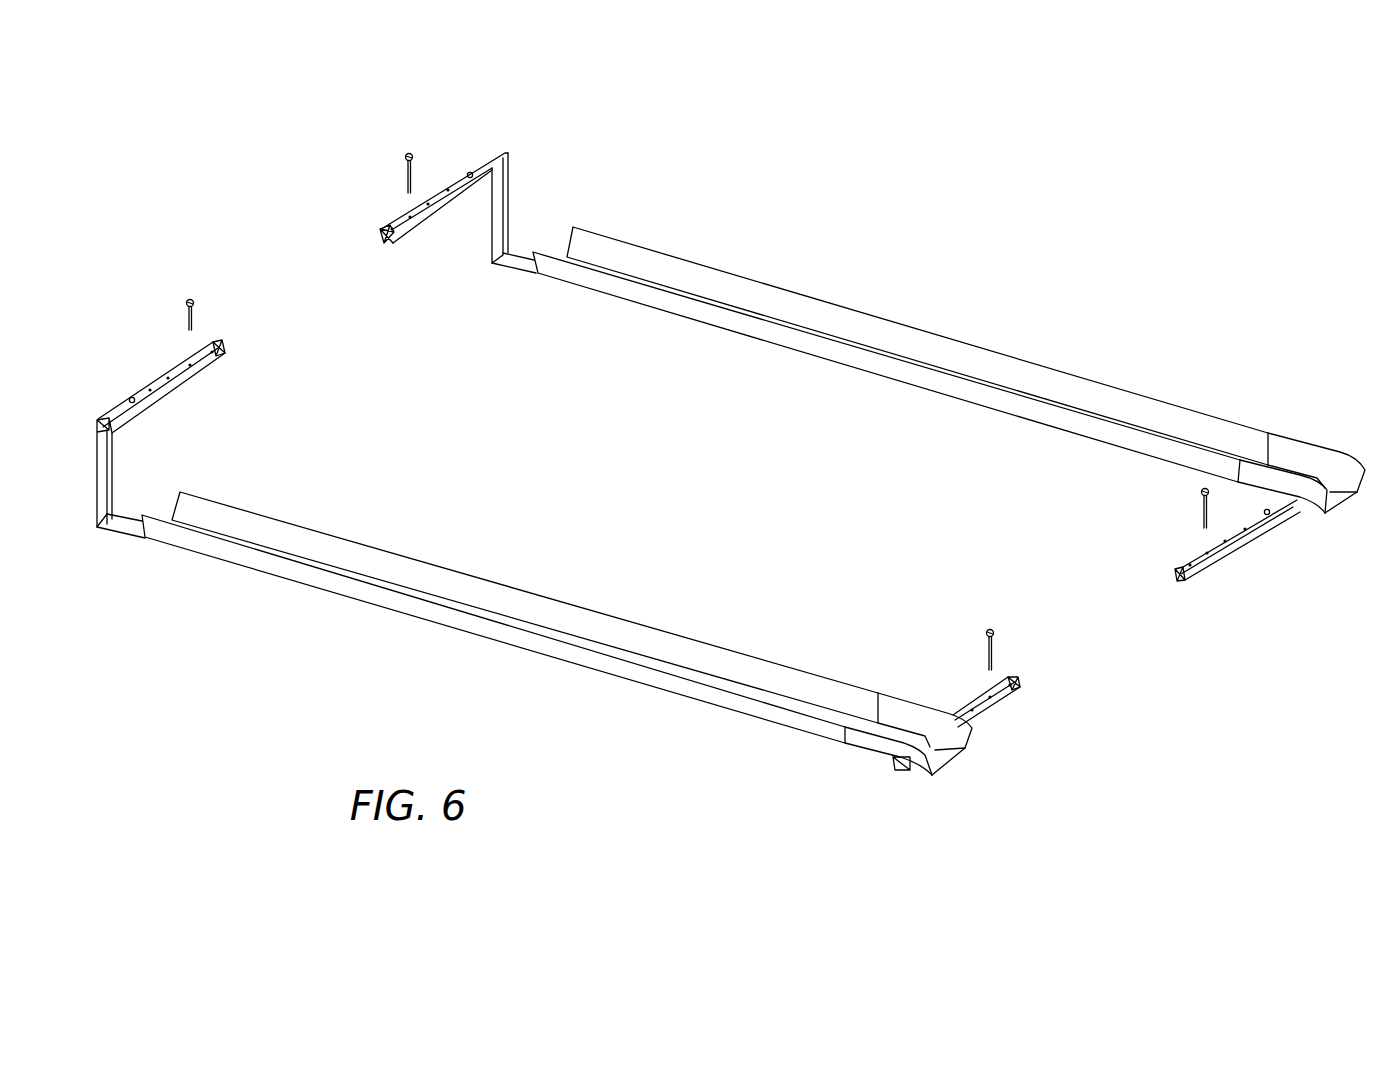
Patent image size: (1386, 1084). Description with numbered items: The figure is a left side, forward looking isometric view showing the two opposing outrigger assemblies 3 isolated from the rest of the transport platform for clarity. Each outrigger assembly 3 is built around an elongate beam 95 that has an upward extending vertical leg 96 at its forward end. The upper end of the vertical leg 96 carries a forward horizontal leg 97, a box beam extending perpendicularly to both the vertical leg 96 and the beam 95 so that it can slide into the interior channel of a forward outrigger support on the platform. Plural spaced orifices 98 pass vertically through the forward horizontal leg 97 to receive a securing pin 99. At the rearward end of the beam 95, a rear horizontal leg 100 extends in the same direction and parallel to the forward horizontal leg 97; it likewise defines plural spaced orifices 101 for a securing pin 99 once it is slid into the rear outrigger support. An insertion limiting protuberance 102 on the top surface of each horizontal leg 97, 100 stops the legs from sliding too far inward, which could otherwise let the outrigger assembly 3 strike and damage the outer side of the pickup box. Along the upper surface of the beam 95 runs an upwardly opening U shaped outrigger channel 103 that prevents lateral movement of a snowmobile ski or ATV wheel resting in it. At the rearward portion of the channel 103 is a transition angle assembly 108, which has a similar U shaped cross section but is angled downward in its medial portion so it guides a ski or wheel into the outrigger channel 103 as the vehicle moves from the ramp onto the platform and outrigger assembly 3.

The outrigger assembly 3 is at (576, 316).
The elongate beam 95 is at (513, 264).
The vertical leg 96 is at (500, 212).
The forward horizontal leg 97 is at (500, 154).
The spaced orifices 98 is at (448, 191).
The securing pin 99 is at (406, 153).
The rear horizontal leg 100 is at (1260, 523).
The spaced orifices 101 is at (1245, 530).
The insertion limiting protuberance 102 is at (470, 172).
The U shaped outrigger channel 103 is at (913, 350).
The transition angle assembly 108 is at (1293, 447).